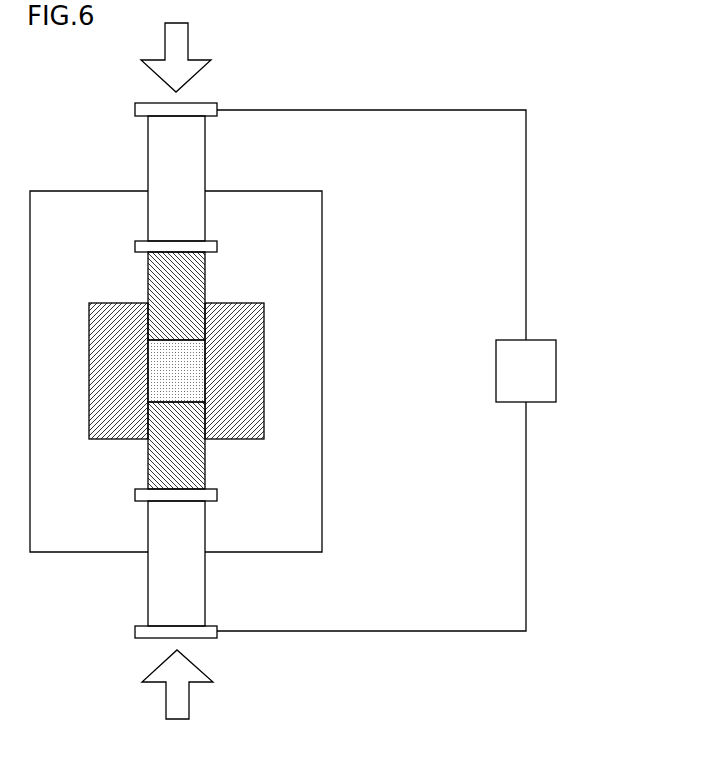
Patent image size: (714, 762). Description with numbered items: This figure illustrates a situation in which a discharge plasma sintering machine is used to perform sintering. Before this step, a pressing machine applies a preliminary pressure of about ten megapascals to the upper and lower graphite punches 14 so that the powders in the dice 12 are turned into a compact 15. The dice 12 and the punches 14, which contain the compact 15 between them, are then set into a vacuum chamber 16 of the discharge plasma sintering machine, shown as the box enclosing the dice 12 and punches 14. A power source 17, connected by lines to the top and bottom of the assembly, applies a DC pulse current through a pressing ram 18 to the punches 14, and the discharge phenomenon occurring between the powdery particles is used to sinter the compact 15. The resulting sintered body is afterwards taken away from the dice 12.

The dice 12 is at (240, 402).
The punches 14 is at (202, 281).
The compact 15 is at (195, 366).
The vacuum chamber 16 is at (298, 490).
The power source 17 is at (533, 371).
The pressing ram 18 is at (182, 153).